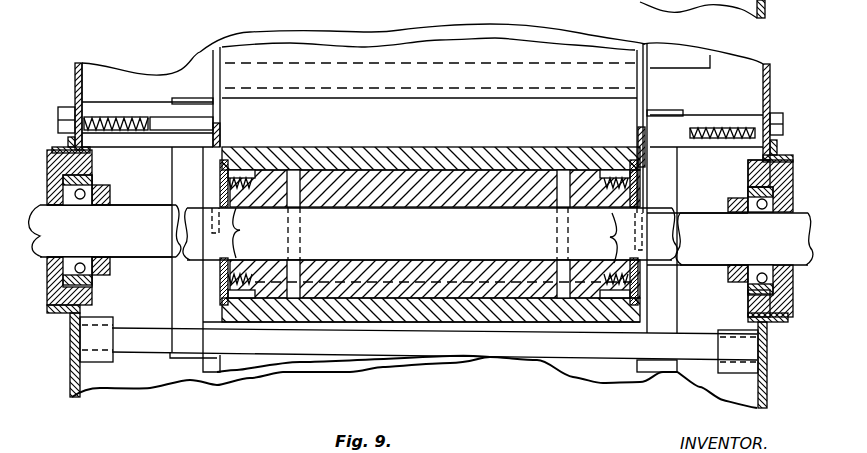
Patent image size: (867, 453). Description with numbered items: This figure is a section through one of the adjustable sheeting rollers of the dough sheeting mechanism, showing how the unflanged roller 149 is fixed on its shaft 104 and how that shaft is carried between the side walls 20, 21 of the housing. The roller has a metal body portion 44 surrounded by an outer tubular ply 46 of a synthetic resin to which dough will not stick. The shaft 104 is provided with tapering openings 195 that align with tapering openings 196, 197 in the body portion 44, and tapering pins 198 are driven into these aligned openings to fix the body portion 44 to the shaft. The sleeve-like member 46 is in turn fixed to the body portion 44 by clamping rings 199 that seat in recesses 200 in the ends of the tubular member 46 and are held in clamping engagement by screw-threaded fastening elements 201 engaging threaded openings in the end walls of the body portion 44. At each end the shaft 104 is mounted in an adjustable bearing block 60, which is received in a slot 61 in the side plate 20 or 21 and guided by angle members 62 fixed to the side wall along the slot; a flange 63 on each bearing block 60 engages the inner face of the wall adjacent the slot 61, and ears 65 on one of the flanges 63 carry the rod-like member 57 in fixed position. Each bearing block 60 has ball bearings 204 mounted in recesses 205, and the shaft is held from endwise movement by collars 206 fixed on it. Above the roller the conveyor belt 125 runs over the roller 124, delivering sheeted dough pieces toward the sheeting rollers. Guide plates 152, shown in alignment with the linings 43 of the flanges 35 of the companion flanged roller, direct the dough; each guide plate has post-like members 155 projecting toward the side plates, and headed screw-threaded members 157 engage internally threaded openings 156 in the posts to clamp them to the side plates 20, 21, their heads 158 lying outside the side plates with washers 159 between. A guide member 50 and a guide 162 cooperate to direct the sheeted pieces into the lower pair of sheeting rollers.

The side wall 20 is at (75, 67).
The side wall 21 is at (762, 67).
The flange 35 is at (182, 303).
The ply of synthetic resin 43 is at (208, 375).
The metal body portion 44 is at (470, 297).
The outer tubular ply of synthetic resin 46 is at (410, 320).
The guide member 50 is at (253, 327).
The rod-like member 57 is at (542, 343).
The bearing block 60 is at (50, 167).
The slot 61 is at (88, 147).
The angle member 62 is at (68, 140).
The flange 63 is at (747, 163).
The ear 65 is at (113, 362).
The shaft 104 is at (423, 222).
The roller 124 is at (620, 45).
The conveyor belt 125 is at (475, 57).
The unflanged roller 149 is at (300, 322).
The guide plate 152 is at (215, 68).
The post-like member 155 is at (100, 115).
The internally threaded opening 156 is at (155, 118).
The headed screw-threaded member 157 is at (143, 133).
The head 158 is at (72, 110).
The washer 159 is at (75, 100).
The guide 162 is at (307, 312).
The tapering opening 195 is at (300, 232).
The tapering opening 196 is at (308, 170).
The tapering opening 197 is at (305, 262).
The tapering pin 198 is at (297, 170).
The clamping ring 199 is at (232, 167).
The recess 200 is at (218, 152).
The screw-threaded fastening element 201 is at (240, 230).
The ball bearing 204 is at (92, 176).
The recess 205 is at (90, 168).
The collar 206 is at (110, 190).